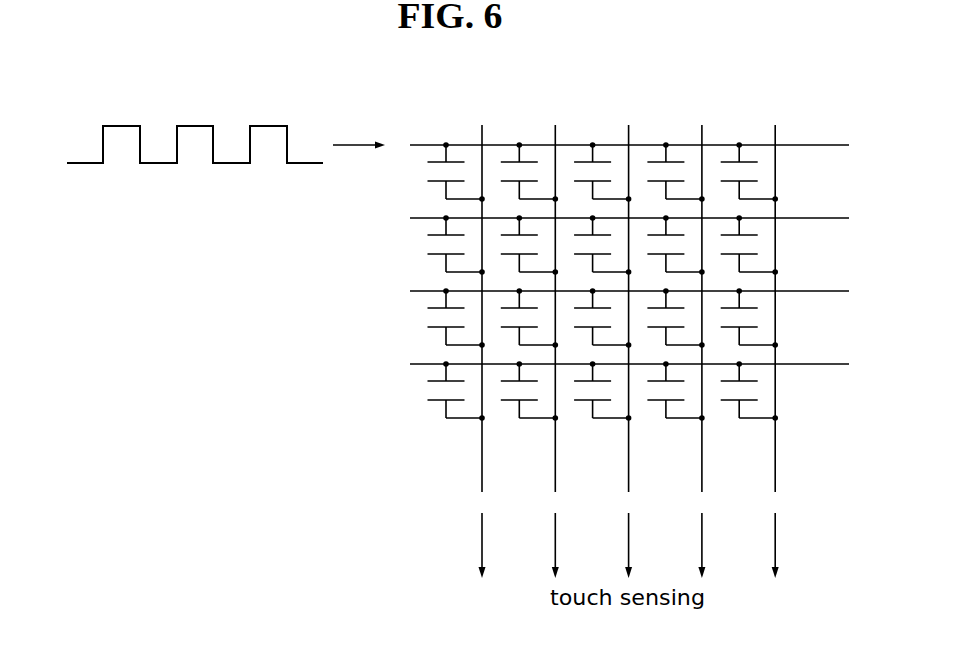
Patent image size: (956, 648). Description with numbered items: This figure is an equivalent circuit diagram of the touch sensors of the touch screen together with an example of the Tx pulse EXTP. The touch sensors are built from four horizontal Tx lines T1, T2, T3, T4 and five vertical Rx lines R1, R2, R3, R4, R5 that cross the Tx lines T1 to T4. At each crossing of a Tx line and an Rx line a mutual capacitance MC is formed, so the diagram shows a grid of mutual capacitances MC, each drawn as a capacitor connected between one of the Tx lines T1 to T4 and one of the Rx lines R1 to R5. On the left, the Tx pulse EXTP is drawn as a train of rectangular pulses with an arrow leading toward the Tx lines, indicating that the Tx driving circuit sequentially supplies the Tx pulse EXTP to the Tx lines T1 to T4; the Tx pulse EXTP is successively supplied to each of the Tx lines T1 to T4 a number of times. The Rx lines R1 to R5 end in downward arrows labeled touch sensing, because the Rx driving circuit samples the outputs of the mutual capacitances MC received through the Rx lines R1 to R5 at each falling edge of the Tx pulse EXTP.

The Tx pulse EXTP is at (220, 161).
The Tx line T1 is at (626, 130).
The Tx line T2 is at (626, 203).
The Tx line T3 is at (626, 276).
The Tx line T4 is at (626, 349).
The Rx line R1 is at (482, 338).
The Rx line R2 is at (555, 338).
The Rx line R3 is at (628, 338).
The Rx line R4 is at (701, 338).
The Rx line R5 is at (775, 338).
The mutual capacitance MC is at (770, 171).